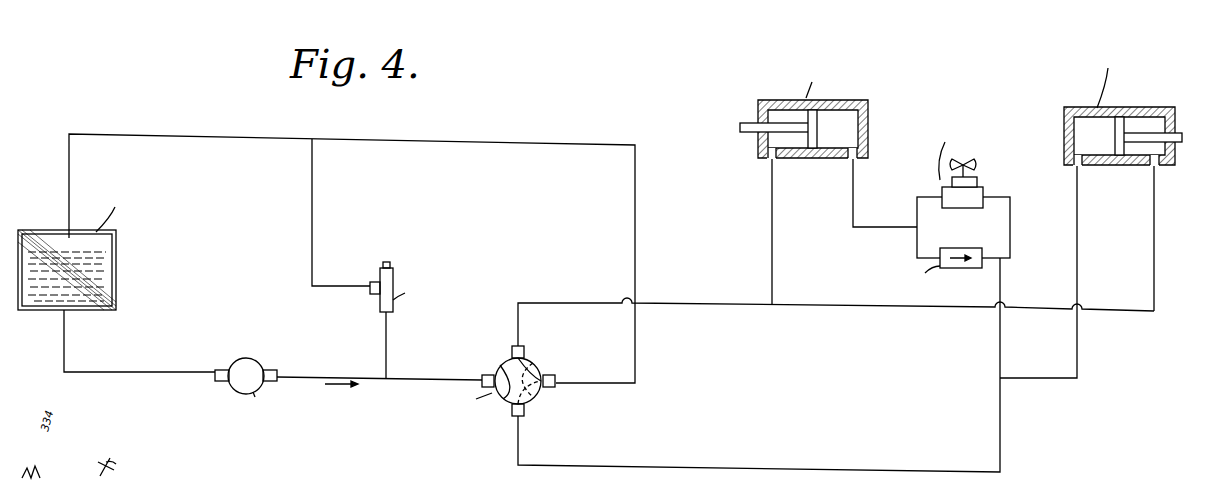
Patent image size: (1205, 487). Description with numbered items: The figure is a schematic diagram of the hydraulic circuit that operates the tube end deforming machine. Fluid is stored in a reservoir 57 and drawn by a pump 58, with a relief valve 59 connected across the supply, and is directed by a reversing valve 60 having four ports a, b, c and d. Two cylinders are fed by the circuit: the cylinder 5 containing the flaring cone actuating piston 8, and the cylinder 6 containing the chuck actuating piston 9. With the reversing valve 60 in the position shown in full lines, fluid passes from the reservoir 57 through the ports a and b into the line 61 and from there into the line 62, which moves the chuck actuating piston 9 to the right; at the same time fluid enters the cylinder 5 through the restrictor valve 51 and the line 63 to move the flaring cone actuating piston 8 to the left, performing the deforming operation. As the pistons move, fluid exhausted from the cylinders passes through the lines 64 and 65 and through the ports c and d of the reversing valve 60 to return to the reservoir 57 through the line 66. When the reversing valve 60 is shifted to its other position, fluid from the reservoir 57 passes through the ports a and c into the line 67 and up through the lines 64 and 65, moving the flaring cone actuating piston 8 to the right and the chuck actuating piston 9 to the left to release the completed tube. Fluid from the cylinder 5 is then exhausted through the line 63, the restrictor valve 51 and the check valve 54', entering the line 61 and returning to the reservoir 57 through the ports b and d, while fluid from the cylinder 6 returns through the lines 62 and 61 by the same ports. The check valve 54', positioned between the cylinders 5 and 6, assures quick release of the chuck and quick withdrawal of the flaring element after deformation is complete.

The cylinder 5 is at (785, 121).
The cylinder 6 is at (1107, 112).
The flaring cone actuating piston 8 is at (814, 150).
The chuck actuating piston 9 is at (1113, 146).
The restrictor valve 51 is at (983, 191).
The check valve 54' is at (925, 252).
The reservoir 57 is at (116, 270).
The pump 58 is at (248, 358).
The relief valve 59 is at (392, 311).
The reversing valve 60 is at (535, 395).
The line 61 is at (751, 467).
The line 62 is at (1078, 241).
The line 63 is at (855, 197).
The line 64 is at (772, 238).
The line 65 is at (1154, 271).
The line 66 is at (536, 142).
The line 67 is at (701, 305).
The port a is at (486, 373).
The port b is at (510, 416).
The port c is at (524, 349).
The port d is at (556, 378).